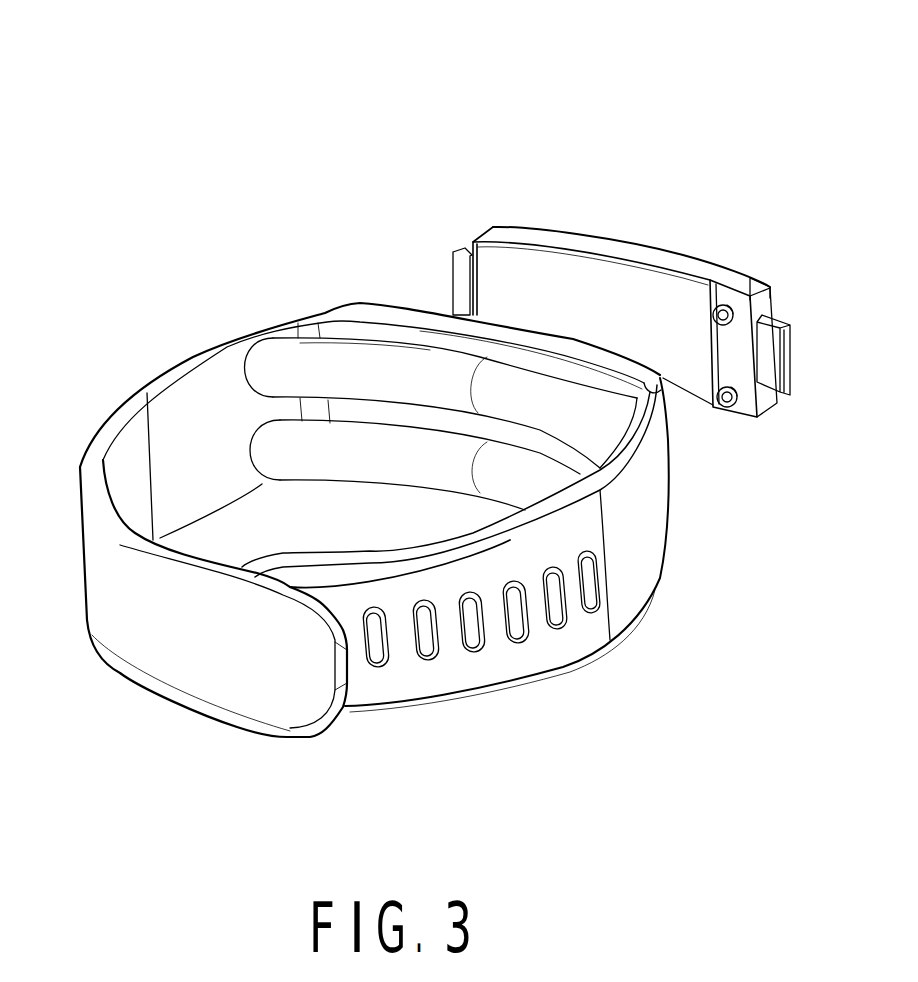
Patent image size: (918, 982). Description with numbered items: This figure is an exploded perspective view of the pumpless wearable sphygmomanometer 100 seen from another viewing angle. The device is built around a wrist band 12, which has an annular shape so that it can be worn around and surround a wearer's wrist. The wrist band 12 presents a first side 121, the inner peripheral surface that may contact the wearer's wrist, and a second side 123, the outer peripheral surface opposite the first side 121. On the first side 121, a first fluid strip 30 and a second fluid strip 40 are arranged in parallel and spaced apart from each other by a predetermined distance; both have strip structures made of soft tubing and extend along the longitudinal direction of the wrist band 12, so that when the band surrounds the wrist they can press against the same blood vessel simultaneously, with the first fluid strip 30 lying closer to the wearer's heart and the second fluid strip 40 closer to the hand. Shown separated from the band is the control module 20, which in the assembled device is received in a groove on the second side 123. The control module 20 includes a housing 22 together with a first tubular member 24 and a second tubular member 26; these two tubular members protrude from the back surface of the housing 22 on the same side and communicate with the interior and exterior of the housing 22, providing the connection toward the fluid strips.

The pumpless wearable sphygmomanometer 100 is at (683, 63).
The wrist band 12 is at (113, 423).
The first side 121 is at (193, 398).
The second side 123 is at (630, 543).
The control module 20 is at (677, 177).
The housing 22 is at (670, 262).
The first tubular member 24 is at (735, 365).
The second tubular member 26 is at (777, 305).
The first fluid strip 30 is at (370, 360).
The second fluid strip 40 is at (307, 438).